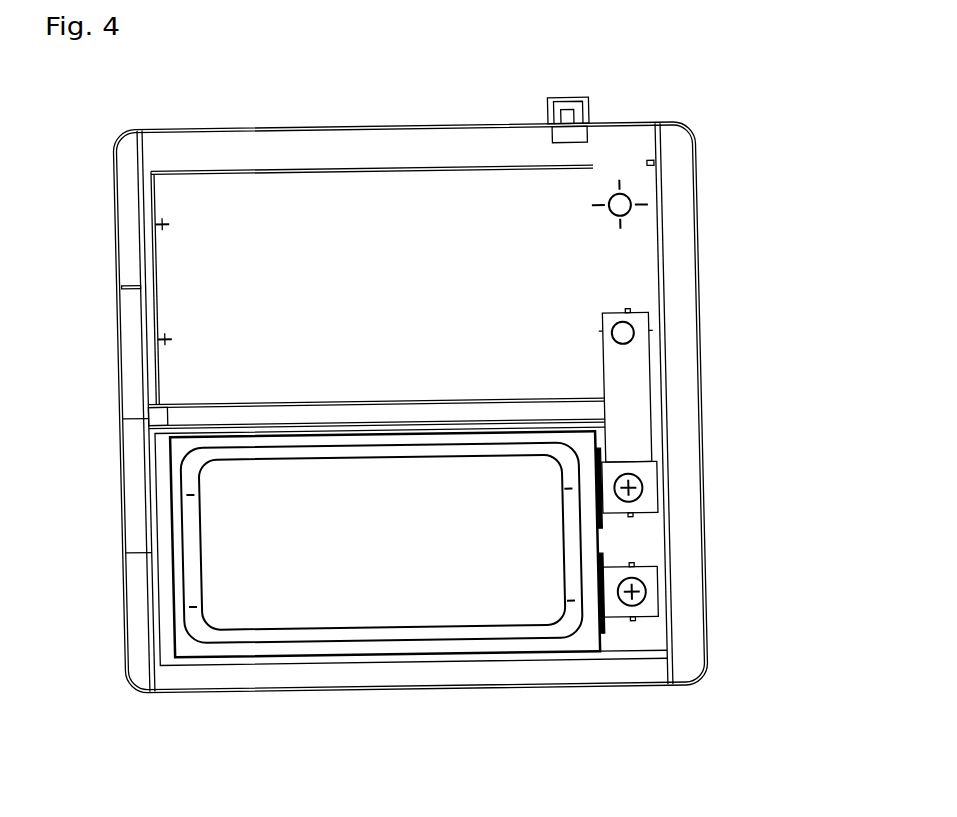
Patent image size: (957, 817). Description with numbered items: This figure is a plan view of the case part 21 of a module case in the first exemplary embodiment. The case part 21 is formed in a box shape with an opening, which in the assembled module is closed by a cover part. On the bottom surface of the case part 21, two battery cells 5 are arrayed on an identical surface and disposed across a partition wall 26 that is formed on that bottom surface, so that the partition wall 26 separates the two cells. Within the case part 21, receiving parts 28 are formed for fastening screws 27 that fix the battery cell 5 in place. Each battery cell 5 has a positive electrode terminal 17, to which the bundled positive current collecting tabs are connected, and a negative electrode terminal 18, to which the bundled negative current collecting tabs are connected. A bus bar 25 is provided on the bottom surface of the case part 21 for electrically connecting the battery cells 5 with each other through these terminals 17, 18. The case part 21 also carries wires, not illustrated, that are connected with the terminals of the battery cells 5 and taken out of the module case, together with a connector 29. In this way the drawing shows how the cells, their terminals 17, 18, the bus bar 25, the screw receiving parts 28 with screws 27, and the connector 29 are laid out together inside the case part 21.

The case part 21 is at (685, 670).
The battery cell 5 is at (463, 558).
The partition wall 26 is at (380, 412).
The bus bar 25 is at (632, 377).
The negative electrode terminal 18 is at (647, 506).
The fastening screw 27 is at (642, 480).
The positive electrode terminal 17 is at (650, 607).
The receiving part 28 is at (632, 192).
The connector 29 is at (588, 107).